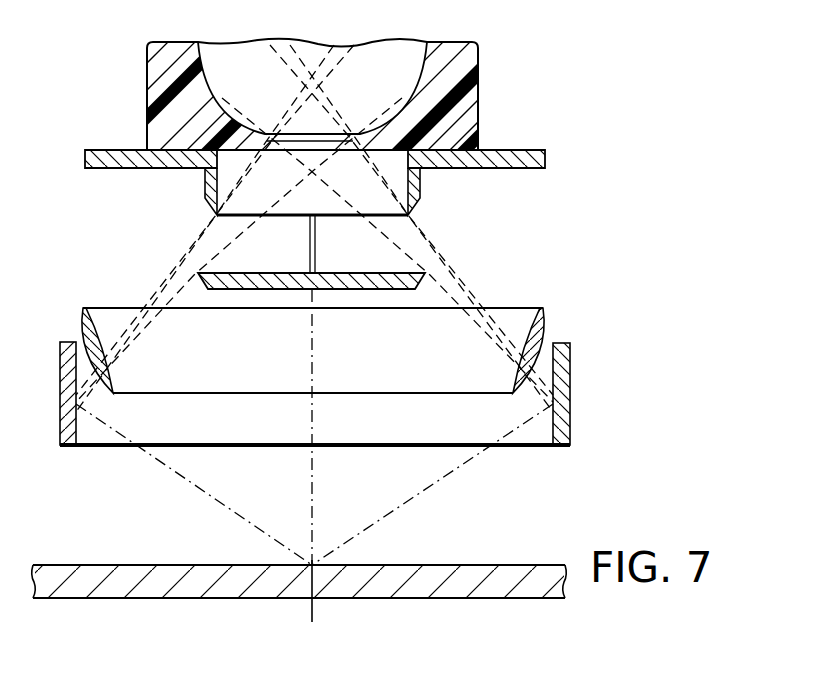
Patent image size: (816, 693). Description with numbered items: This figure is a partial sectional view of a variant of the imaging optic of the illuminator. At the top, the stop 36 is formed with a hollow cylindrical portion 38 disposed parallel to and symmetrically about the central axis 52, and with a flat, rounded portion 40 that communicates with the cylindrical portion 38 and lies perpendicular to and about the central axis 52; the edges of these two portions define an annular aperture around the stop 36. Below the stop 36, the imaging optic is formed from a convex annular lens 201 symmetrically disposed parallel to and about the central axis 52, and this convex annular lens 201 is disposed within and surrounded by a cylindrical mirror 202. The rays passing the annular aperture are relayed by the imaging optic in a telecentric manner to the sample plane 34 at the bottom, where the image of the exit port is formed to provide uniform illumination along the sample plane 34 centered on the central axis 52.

The hollow cylindrical portion 38 is at (545, 157).
The stop 36 is at (445, 222).
The flat rounded portion 40 is at (435, 288).
The convex annular lens 201 is at (543, 308).
The cylindrical mirror 202 is at (571, 383).
The sample plane 34 is at (491, 565).
The central axis 52 is at (314, 608).